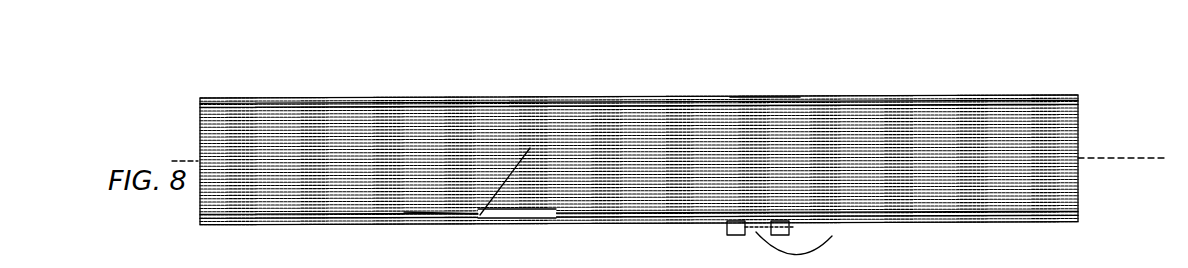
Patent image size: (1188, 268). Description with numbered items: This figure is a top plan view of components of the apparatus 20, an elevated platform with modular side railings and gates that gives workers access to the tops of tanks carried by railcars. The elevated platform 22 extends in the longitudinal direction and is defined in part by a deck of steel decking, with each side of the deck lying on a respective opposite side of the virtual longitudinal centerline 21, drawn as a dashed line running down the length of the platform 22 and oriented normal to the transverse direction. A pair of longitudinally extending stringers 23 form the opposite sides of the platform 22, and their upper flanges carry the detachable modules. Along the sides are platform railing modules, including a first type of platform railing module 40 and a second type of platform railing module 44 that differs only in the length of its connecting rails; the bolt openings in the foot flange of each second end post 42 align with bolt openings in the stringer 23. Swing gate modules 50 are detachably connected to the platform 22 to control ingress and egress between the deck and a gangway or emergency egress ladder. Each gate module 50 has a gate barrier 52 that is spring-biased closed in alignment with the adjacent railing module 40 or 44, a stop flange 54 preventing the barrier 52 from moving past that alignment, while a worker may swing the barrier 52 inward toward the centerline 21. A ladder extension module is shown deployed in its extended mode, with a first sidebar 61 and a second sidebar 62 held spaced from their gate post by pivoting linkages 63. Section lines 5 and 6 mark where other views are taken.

The apparatus 20 is at (200, 60).
The virtual longitudinal centerline 21 is at (1161, 163).
The elevated platform 22 is at (1098, 120).
The stringer 23 is at (895, 96).
The platform railing module 40 is at (1075, 260).
The second end post 42 is at (392, 263).
The second type of platform railing module 44 is at (573, 260).
The swing gate module 50 is at (768, 86).
The gate barrier 52 is at (780, 98).
The stop flange 54 is at (527, 238).
The first sidebar 61 is at (744, 236).
The second sidebar 62 is at (793, 243).
The linkage 63 is at (800, 227).
The section line 5- 5 is at (685, 97).
The section line 6- 6 is at (641, 267).